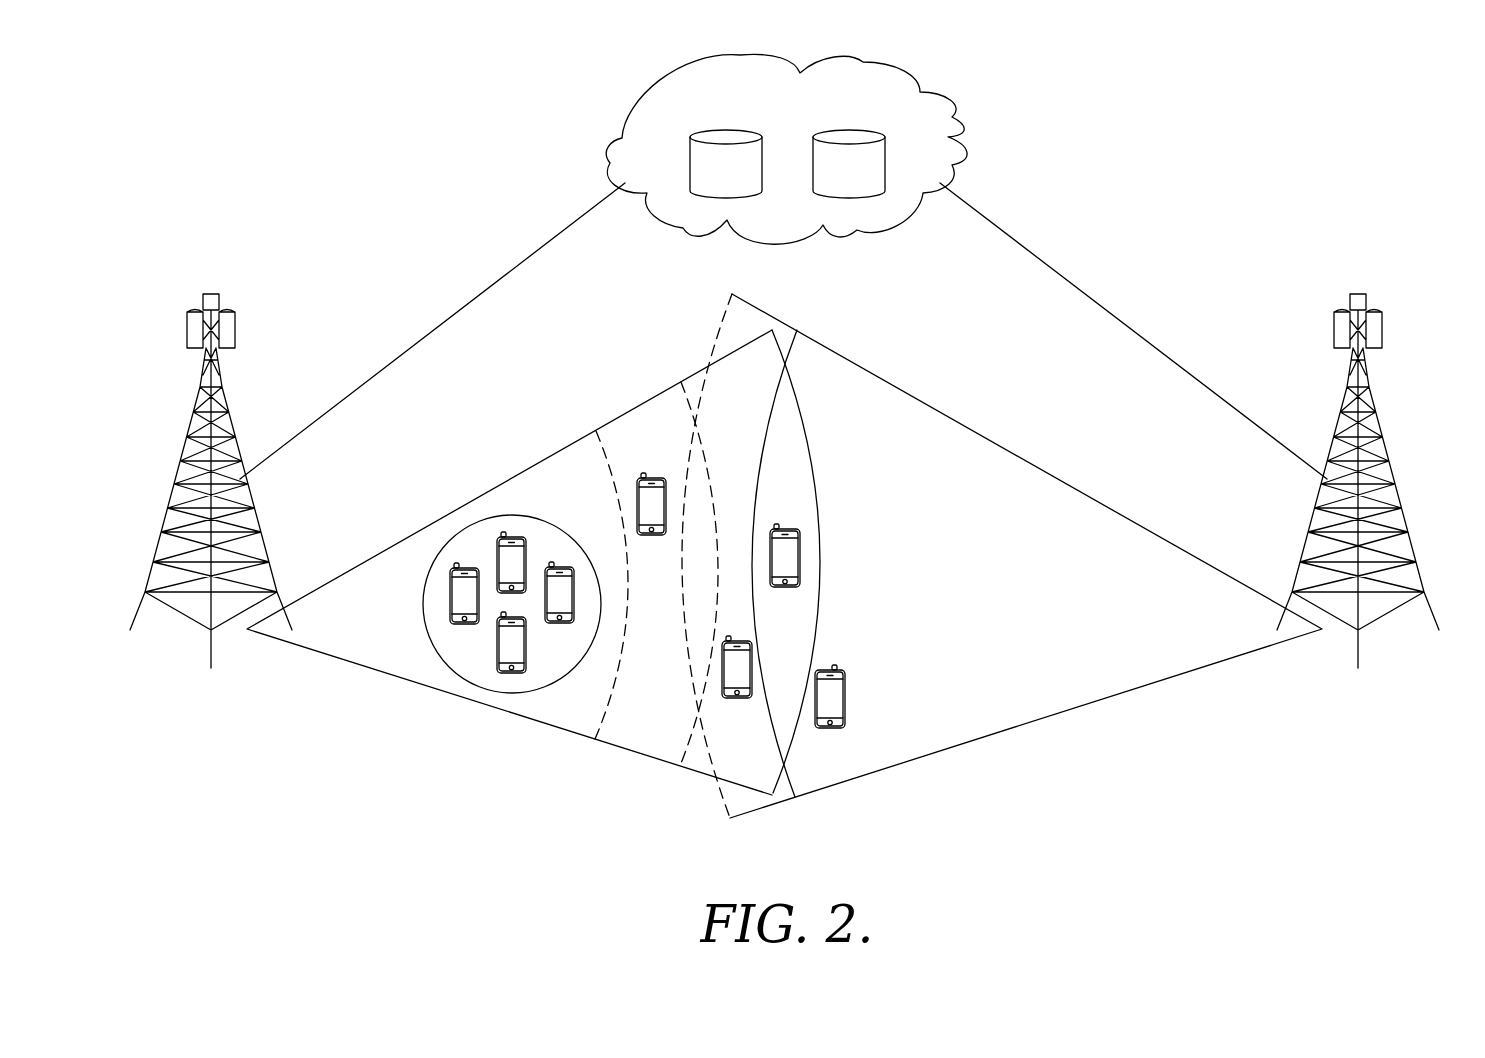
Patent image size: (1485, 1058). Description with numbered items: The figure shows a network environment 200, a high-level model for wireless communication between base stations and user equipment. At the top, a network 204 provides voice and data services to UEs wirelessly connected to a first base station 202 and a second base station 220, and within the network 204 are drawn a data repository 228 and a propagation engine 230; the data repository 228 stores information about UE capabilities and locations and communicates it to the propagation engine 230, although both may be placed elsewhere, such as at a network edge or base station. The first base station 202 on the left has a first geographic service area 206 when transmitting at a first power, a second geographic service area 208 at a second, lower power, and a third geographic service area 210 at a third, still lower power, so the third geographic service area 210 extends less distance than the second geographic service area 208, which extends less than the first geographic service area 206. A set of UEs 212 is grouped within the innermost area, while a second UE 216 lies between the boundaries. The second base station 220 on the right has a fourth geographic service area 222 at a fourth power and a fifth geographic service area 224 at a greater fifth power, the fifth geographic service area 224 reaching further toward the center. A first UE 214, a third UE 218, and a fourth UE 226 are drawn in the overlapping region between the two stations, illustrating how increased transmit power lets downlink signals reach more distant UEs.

The network environment 200 is at (1292, 62).
The first base station 202 is at (241, 298).
The network 204 is at (878, 62).
The first geographic service area 206 is at (693, 392).
The second geographic service area 208 is at (645, 420).
The third geographic service area 210 is at (565, 467).
The set of UEs 212 is at (537, 517).
The first UE 214 is at (782, 588).
The second UE 216 is at (645, 477).
The third UE 218 is at (737, 699).
The second base station 220 is at (1387, 298).
The fourth geographic service area 222 is at (908, 516).
The fifth geographic service area 224 is at (750, 323).
The fourth UE 226 is at (828, 728).
The data repository 228 is at (708, 128).
The propagation engine 230 is at (867, 128).